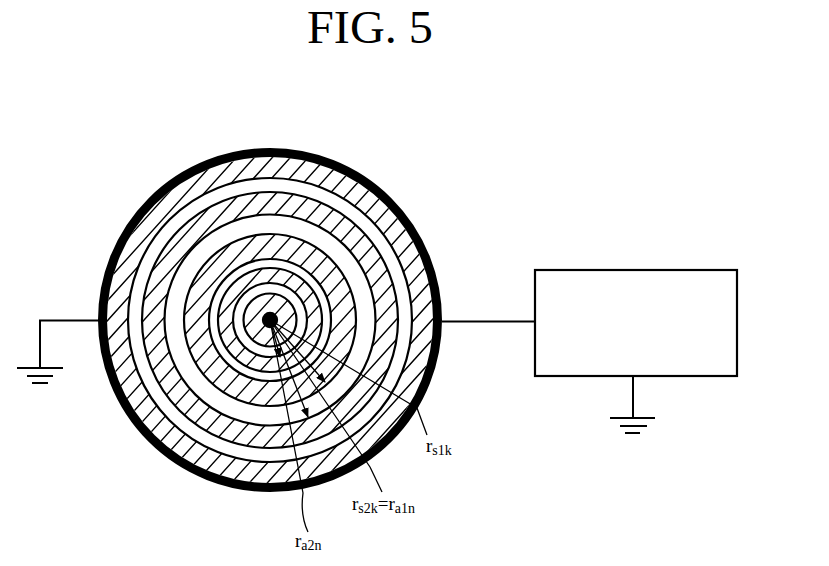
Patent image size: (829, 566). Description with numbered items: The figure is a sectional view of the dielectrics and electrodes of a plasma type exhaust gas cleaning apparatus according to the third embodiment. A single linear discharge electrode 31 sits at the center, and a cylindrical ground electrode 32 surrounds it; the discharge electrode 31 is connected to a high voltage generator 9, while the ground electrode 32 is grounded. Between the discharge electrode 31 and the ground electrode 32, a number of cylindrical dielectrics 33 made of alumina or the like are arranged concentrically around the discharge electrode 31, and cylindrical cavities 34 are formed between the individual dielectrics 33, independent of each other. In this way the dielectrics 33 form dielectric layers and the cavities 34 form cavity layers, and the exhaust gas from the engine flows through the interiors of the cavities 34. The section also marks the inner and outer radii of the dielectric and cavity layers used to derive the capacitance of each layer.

The high voltage generator 9 is at (683, 270).
The discharge electrode 31 is at (282, 300).
The ground electrode 32 is at (256, 148).
The dielectrics 33 is at (163, 273).
The cavities 34 is at (243, 288).